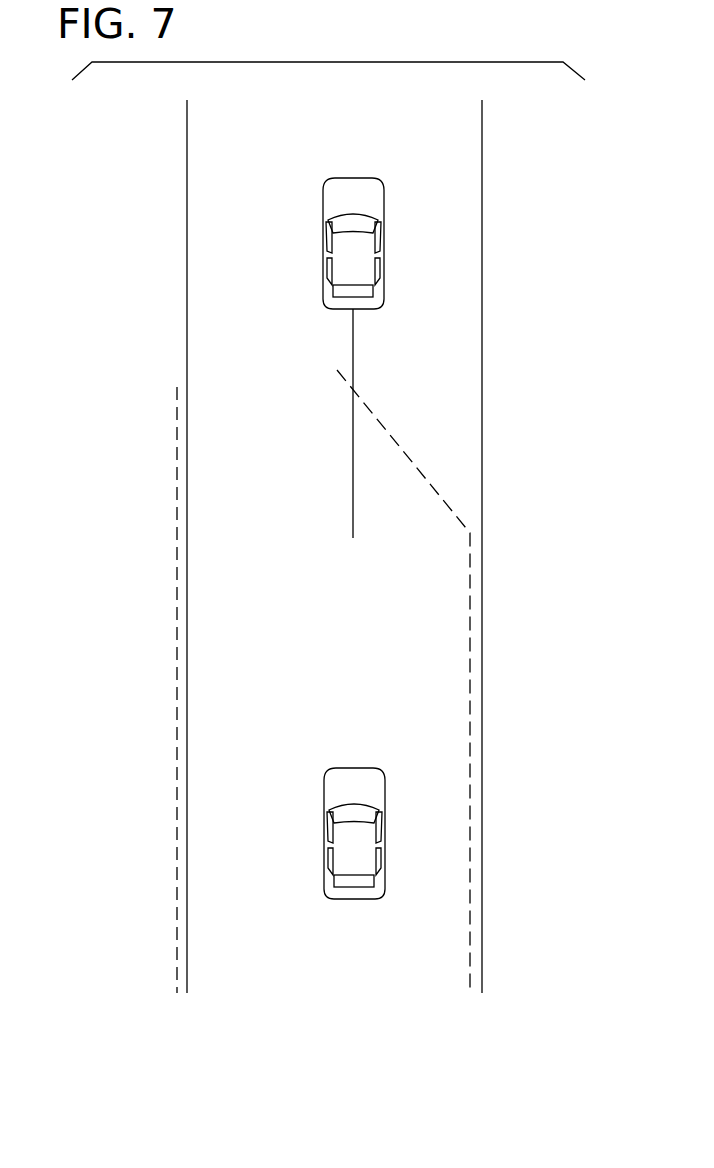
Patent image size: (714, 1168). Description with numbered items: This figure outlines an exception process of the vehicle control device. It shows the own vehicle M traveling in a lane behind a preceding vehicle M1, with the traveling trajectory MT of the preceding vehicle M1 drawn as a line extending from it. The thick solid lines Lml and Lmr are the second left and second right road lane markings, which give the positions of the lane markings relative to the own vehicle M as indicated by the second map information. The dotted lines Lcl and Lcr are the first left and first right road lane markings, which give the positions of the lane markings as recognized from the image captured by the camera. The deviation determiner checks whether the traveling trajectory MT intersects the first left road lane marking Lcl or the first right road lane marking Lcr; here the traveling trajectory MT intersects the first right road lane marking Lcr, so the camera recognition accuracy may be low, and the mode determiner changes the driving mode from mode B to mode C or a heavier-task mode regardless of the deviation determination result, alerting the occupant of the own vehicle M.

The second left road lane marking Lml is at (187, 136).
The second right road lane marking Lmr is at (482, 137).
The first left road lane marking Lcl is at (177, 418).
The first right road lane marking Lcr is at (470, 586).
The traveling trajectory MT is at (353, 473).
The preceding vehicle M1 is at (323, 243).
The own vehicle M is at (324, 833).